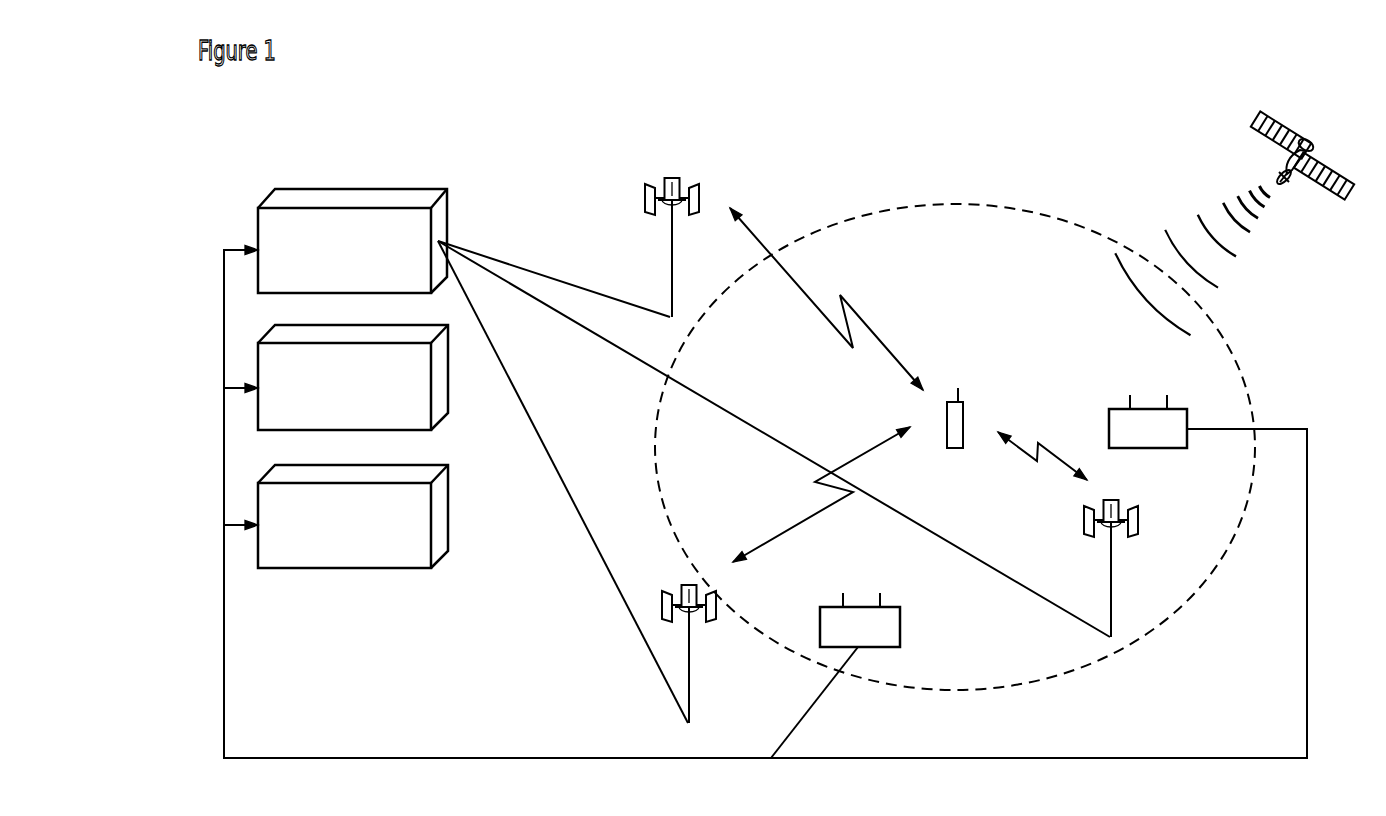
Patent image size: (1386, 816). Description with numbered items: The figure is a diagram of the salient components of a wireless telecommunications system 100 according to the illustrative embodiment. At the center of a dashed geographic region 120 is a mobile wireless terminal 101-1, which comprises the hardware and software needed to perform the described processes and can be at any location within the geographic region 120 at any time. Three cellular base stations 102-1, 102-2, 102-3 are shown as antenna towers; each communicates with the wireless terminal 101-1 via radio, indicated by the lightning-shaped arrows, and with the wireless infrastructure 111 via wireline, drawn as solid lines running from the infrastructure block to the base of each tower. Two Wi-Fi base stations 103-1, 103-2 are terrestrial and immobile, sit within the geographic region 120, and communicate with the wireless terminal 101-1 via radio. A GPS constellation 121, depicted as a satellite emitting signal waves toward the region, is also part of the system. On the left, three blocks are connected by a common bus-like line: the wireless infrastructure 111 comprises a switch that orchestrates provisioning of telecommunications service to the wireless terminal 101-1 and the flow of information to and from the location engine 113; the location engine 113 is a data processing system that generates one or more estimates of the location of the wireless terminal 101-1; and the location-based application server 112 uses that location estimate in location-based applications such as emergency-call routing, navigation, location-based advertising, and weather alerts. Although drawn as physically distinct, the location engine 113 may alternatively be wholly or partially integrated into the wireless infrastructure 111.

The wireless telecommunications system 100 is at (342, 116).
The wireless infrastructure 111 is at (352, 241).
The location-based application server 112 is at (353, 377).
The location engine 113 is at (353, 516).
The geographic region 120 is at (955, 425).
The GPS constellation 121 is at (1234, 216).
The wireless terminal 101-1 is at (908, 385).
The cellular base station 102-1 is at (641, 247).
The cellular base station 102-2 is at (719, 654).
The cellular base station 102-3 is at (1142, 568).
The Wi-Fi base station 103-1 is at (1174, 434).
The Wi-Fi base station 103-2 is at (827, 614).